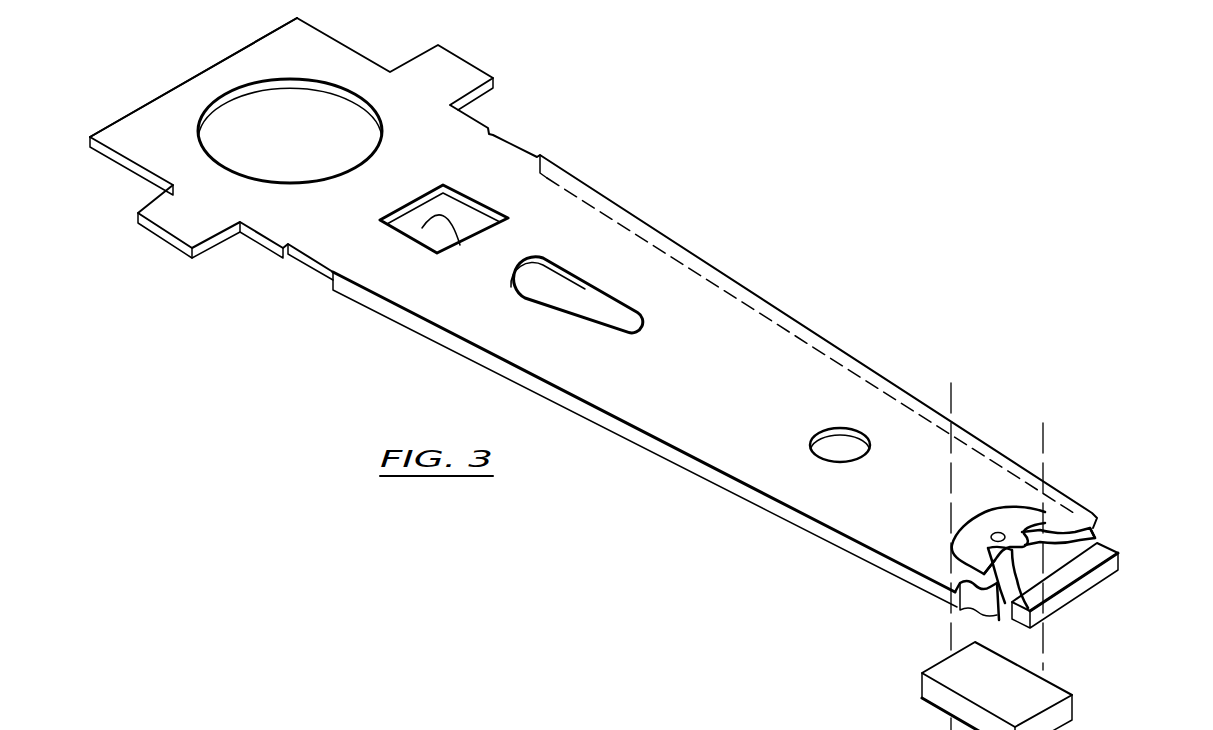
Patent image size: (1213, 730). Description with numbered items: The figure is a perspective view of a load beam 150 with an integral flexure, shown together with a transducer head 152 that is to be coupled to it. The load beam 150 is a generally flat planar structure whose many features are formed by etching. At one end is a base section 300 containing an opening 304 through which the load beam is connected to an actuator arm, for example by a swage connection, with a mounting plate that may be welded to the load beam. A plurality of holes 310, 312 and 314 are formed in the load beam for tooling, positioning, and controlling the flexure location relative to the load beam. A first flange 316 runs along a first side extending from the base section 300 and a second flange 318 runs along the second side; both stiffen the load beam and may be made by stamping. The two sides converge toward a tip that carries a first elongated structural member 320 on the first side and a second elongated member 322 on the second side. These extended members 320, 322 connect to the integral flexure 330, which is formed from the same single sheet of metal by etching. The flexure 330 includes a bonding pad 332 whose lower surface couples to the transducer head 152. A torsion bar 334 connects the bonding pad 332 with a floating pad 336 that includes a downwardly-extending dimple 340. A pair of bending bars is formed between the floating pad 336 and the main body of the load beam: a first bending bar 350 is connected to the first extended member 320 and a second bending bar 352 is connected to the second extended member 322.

The load beam 150 is at (732, 386).
The transducer head 152 is at (1009, 689).
The base section 300 is at (285, 47).
The opening 304 is at (317, 177).
The hole 310 is at (420, 238).
The hole 312 is at (597, 316).
The hole 314 is at (838, 428).
The first flange 316 is at (650, 447).
The second flange 318 is at (650, 247).
The first elongated structural member 320 is at (938, 562).
The second elongated member 322 is at (1052, 510).
The integral flexure 330 is at (1138, 560).
The bonding pad 332 is at (1087, 573).
The torsion bar 334 is at (1001, 597).
The floating pad 336 is at (983, 537).
The dimple 340 is at (1000, 532).
The first bending bar 350 is at (997, 615).
The second bending bar 352 is at (1088, 538).